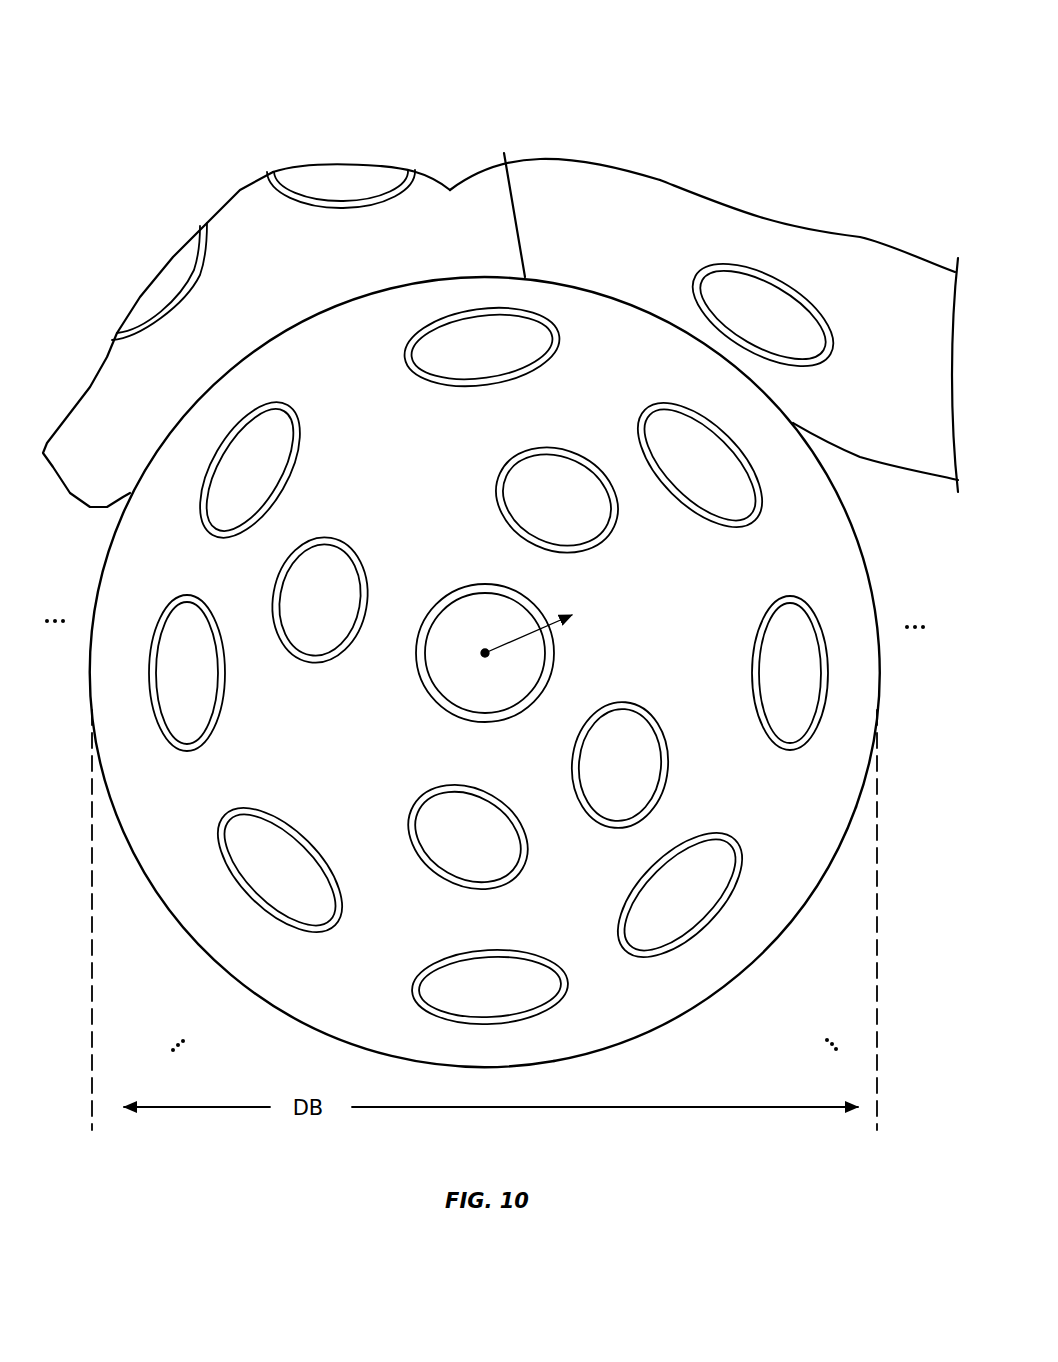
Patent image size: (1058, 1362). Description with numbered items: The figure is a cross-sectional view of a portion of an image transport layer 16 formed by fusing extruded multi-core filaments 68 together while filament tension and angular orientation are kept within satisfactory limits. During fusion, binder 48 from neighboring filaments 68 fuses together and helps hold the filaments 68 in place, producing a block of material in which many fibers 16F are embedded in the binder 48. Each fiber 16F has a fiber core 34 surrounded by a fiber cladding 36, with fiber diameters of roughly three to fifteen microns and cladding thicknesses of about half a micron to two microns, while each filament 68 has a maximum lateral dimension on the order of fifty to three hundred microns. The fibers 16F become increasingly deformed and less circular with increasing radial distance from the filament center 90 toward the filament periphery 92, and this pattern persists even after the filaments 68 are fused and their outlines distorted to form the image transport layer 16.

The image transport layer 16 is at (496, 74).
The fibers 16F is at (443, 463).
The fiber core 34 is at (488, 664).
The fiber cladding 36 is at (455, 593).
The binder 48 is at (487, 188).
The multi-core filaments 68 is at (423, 199).
The filament center 90 is at (487, 656).
The filament periphery 92 is at (795, 920).